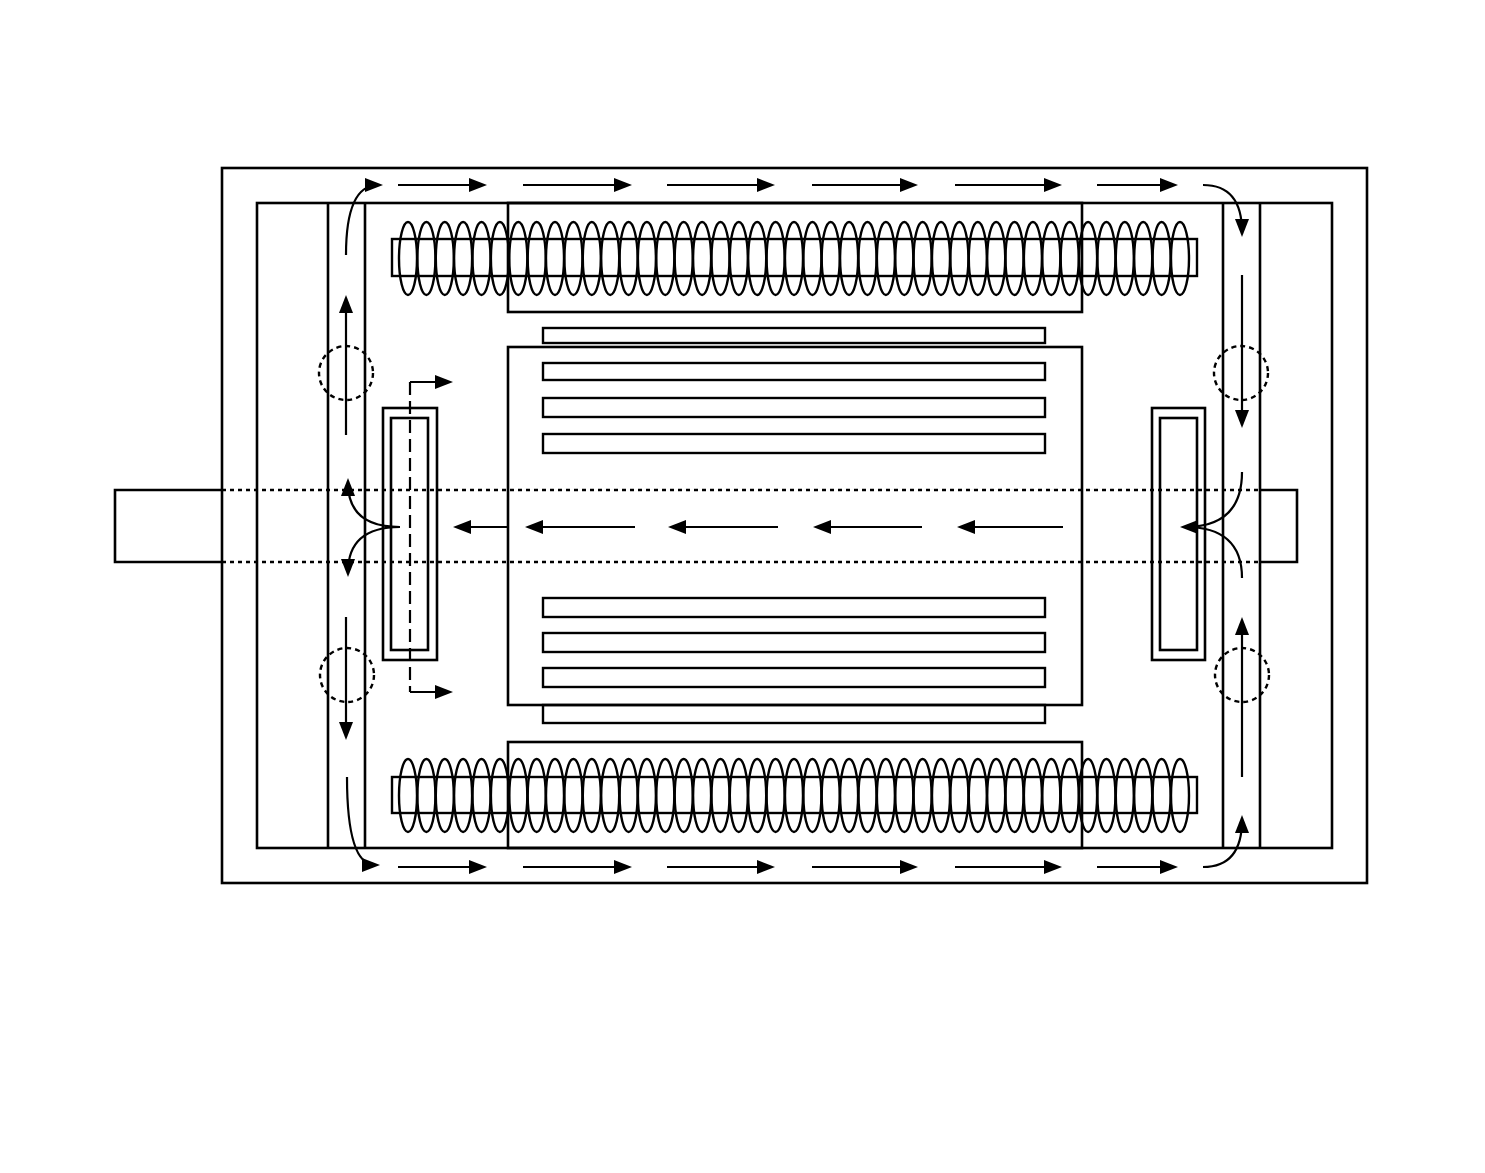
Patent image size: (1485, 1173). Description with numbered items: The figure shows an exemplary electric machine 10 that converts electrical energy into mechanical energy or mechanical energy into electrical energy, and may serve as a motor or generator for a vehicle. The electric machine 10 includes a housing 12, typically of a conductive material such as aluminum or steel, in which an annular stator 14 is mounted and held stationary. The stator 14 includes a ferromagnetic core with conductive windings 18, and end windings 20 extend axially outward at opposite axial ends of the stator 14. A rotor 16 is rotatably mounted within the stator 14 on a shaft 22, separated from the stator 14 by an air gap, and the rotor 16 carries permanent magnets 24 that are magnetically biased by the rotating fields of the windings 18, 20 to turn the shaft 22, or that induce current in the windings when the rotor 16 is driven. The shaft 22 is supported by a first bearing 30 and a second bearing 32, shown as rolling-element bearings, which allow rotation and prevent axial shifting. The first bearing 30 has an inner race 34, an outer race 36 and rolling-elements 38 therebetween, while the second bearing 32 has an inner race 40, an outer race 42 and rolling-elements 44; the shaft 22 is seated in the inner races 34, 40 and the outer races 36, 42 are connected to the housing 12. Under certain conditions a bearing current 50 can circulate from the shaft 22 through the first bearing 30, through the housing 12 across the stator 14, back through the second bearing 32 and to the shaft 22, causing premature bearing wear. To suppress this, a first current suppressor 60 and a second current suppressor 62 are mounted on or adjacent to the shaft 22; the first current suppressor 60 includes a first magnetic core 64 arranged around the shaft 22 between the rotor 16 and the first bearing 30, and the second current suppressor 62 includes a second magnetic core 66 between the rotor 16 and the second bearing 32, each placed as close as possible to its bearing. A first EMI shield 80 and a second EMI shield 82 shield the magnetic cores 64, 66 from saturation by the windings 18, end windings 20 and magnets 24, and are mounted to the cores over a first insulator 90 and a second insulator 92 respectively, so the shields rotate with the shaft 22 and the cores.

The electric machine 10 is at (784, 526).
The housing 12 is at (1367, 168).
The stator 14 is at (687, 203).
The rotor 16 is at (1062, 345).
The windings 18 is at (540, 240).
The end windings 20 is at (433, 240).
The shaft 22 is at (1297, 518).
The permanent magnets 24 is at (797, 328).
The first bearing 30 is at (318, 362).
The second bearing 32 is at (1267, 362).
The inner race 34 is at (327, 443).
The outer race 36 is at (327, 275).
The rolling-elements 38 is at (318, 380).
The inner race 40 is at (1262, 427).
The outer race 42 is at (1262, 292).
The rolling-elements 44 is at (1268, 372).
The bearing current 50 is at (1005, 183).
The first current suppressor 60 is at (390, 580).
The second current suppressor 62 is at (1198, 580).
The first magnetic core 64 is at (400, 470).
The second magnetic core 66 is at (1180, 470).
The first EMI shield 80 is at (383, 615).
The second EMI shield 82 is at (1207, 600).
The first insulator 90 is at (400, 660).
The second insulator 92 is at (1170, 657).